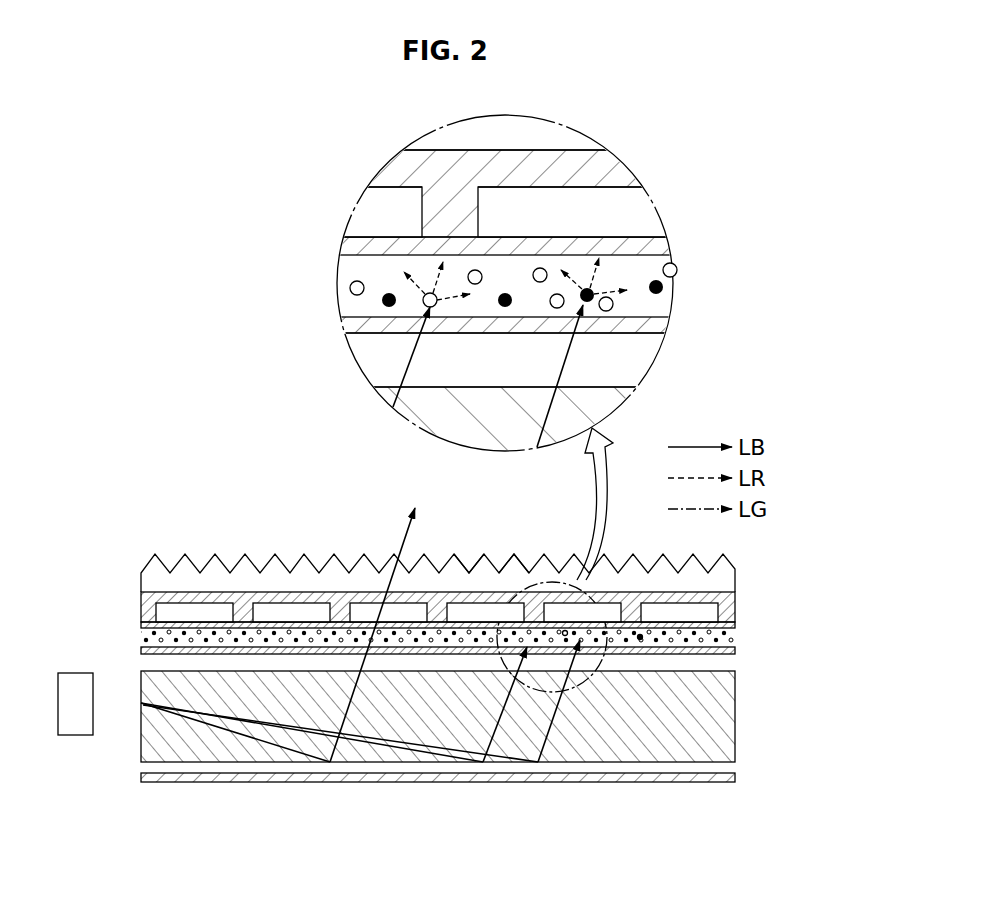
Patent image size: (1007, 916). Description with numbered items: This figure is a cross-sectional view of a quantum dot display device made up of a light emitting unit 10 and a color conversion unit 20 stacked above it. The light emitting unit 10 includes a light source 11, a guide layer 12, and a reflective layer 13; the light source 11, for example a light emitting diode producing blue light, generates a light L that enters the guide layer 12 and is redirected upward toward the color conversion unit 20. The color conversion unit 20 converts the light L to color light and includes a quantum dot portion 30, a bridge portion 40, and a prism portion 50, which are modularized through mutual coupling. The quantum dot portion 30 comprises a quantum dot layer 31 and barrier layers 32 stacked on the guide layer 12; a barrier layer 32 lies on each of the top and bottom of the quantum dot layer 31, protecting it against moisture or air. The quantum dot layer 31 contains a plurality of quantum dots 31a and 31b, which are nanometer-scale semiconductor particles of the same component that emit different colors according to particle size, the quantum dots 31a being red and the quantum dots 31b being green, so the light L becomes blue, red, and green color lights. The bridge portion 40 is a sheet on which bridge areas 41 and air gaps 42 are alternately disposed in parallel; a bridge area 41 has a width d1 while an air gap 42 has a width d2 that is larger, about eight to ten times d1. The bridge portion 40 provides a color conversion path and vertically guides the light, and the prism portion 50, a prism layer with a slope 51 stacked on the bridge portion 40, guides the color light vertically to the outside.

The light emitting unit 10 is at (48, 837).
The light source 11 is at (74, 735).
The guide layer 12 is at (173, 740).
The reflective layer 13 is at (231, 778).
The color conversion unit 20 is at (127, 553).
The quantum dot portion 30 is at (798, 600).
The quantum dot layer 31 is at (737, 638).
The quantum dot (red) 31a is at (565, 630).
The quantum dot (green) 31b is at (640, 634).
The barrier layer 32 is at (737, 622).
The bridge portion 40 is at (798, 527).
The bridge area 41 is at (727, 603).
The air gap 42 is at (675, 612).
The prism portion 50 is at (511, 572).
The slope 51 is at (473, 560).
The width of bridge area d1 is at (233, 622).
The width of air gap d2 is at (330, 622).
The light L is at (141, 703).